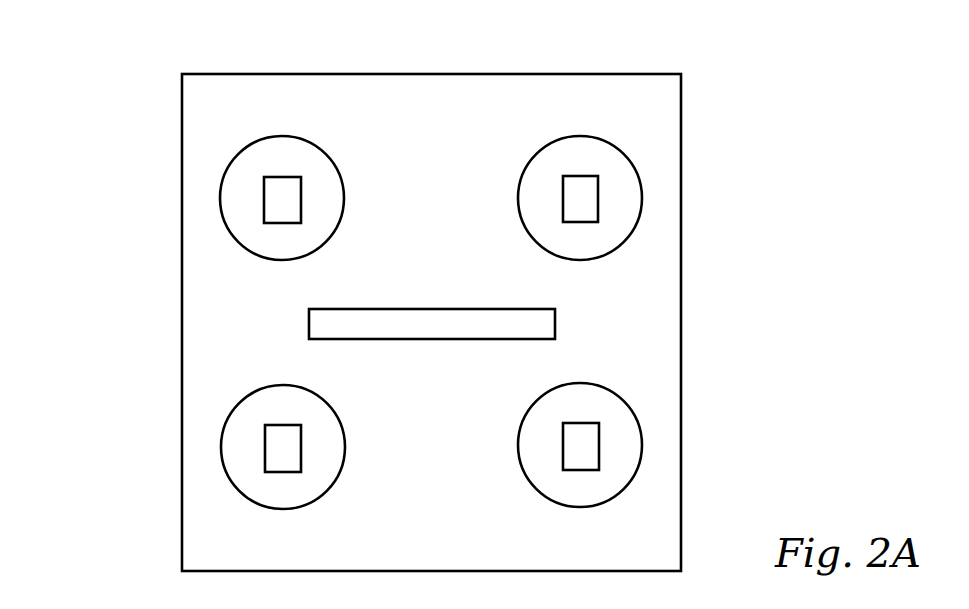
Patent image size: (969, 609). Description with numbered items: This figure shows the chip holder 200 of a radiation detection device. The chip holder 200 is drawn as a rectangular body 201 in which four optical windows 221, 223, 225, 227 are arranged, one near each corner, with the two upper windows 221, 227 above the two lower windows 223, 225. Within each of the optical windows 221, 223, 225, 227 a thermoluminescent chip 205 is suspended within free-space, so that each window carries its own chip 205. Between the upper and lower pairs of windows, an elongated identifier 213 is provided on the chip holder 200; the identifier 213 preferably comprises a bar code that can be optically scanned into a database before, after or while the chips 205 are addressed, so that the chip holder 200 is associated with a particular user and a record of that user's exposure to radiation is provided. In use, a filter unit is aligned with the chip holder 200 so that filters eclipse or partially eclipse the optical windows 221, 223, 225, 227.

The chip holder 200 is at (130, 58).
The substrate 201 is at (660, 517).
The thermoluminescent chip 205 is at (278, 212).
The identifier 213 is at (555, 320).
The optical window 221 is at (238, 195).
The optical window 223 is at (242, 450).
The optical window 225 is at (623, 448).
The optical window 227 is at (623, 195).